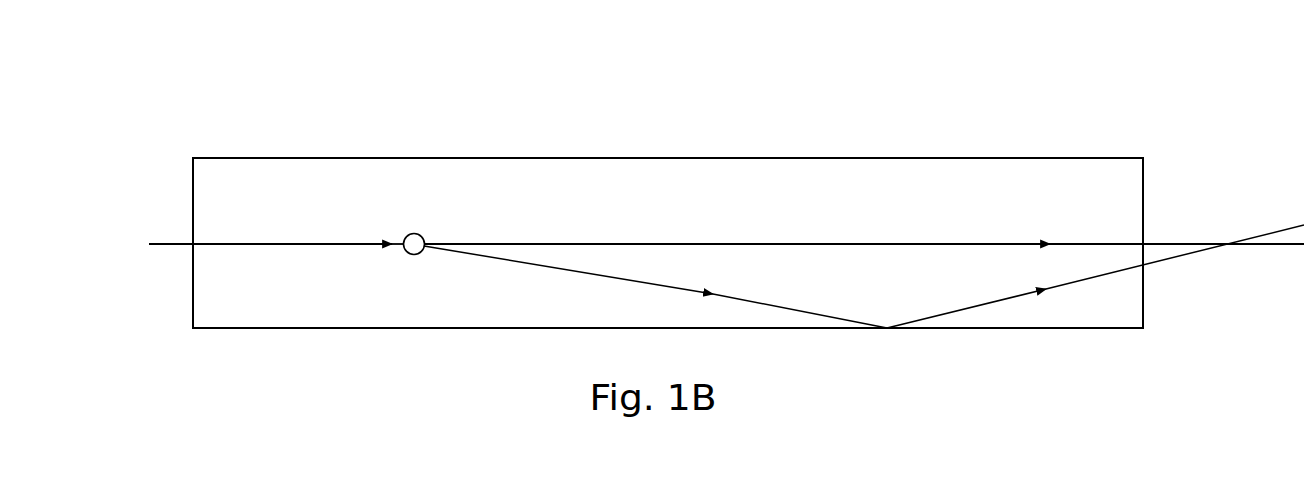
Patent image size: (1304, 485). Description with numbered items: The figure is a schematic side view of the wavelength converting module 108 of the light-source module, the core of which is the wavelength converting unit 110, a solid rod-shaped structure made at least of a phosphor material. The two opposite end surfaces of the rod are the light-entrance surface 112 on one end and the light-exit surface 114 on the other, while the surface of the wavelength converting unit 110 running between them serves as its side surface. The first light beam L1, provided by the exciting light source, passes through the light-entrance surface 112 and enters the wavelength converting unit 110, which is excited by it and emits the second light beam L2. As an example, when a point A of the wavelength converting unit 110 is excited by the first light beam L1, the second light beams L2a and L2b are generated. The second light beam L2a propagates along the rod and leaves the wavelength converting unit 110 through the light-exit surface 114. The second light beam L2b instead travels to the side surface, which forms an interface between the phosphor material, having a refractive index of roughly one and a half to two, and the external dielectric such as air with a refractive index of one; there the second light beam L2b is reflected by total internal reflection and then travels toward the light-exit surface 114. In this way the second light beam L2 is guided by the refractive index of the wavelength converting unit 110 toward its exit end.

The wavelength converting module 108 is at (122, 82).
The wavelength converting unit 110 is at (298, 157).
The light-entrance surface 112 is at (182, 304).
The light-exit surface 114 is at (1153, 172).
The point A is at (414, 233).
The first light beam L1 is at (167, 242).
The second light beam L2 is at (1207, 392).
The second light beam L2a is at (1093, 246).
The second light beam L2b is at (1166, 262).